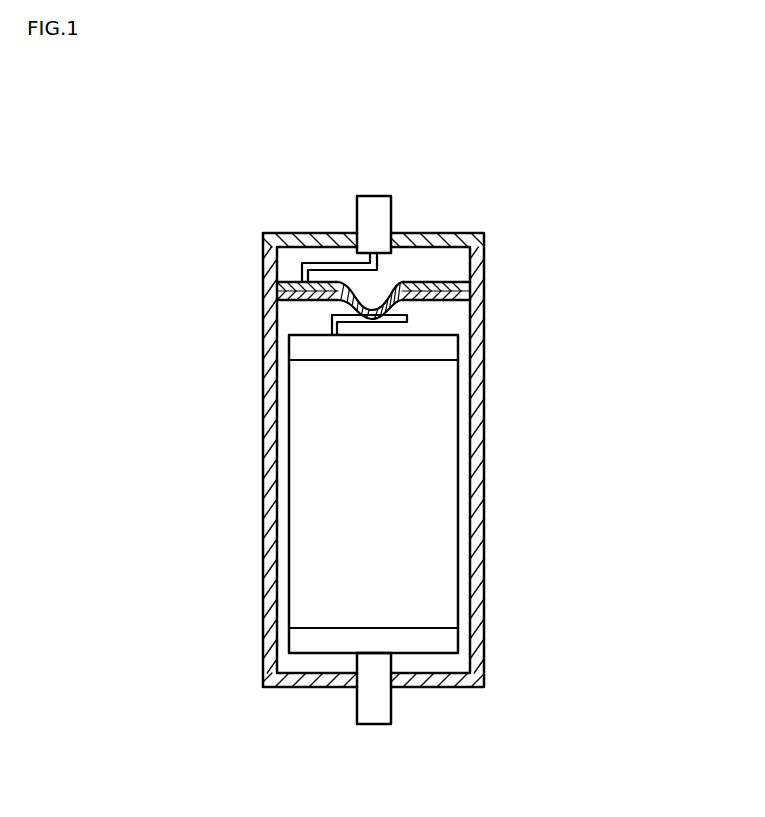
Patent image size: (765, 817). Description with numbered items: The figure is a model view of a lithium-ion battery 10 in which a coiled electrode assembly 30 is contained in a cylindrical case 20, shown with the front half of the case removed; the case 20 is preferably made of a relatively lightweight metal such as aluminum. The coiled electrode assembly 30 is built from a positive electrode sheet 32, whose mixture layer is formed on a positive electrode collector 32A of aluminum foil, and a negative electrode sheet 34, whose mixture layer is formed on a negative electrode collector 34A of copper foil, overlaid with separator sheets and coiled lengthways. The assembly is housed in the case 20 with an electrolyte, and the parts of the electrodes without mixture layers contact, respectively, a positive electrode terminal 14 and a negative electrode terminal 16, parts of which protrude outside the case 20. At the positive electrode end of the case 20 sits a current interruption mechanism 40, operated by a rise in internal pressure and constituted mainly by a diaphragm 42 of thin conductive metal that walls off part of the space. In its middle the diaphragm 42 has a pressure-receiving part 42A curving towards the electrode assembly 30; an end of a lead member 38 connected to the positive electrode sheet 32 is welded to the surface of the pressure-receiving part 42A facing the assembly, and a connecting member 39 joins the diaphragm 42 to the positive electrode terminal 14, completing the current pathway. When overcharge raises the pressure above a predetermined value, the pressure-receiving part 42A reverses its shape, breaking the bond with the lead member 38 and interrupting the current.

The lithium-ion battery 10 is at (604, 474).
The positive electrode terminal 14 is at (360, 208).
The negative electrode terminal 16 is at (390, 712).
The cylindrical case 20 is at (252, 465).
The coiled electrode assembly 30 is at (279, 557).
The positive electrode sheet 32 is at (294, 327).
The positive electrode collector 32A is at (295, 344).
The negative electrode sheet 34 is at (436, 665).
The negative electrode collector 34A is at (450, 640).
The lead member 38 is at (397, 322).
The connecting member 39 is at (307, 263).
The current interruption mechanism 40 is at (421, 259).
The diaphragm 42 is at (438, 282).
The pressure-receiving part 42A is at (398, 306).